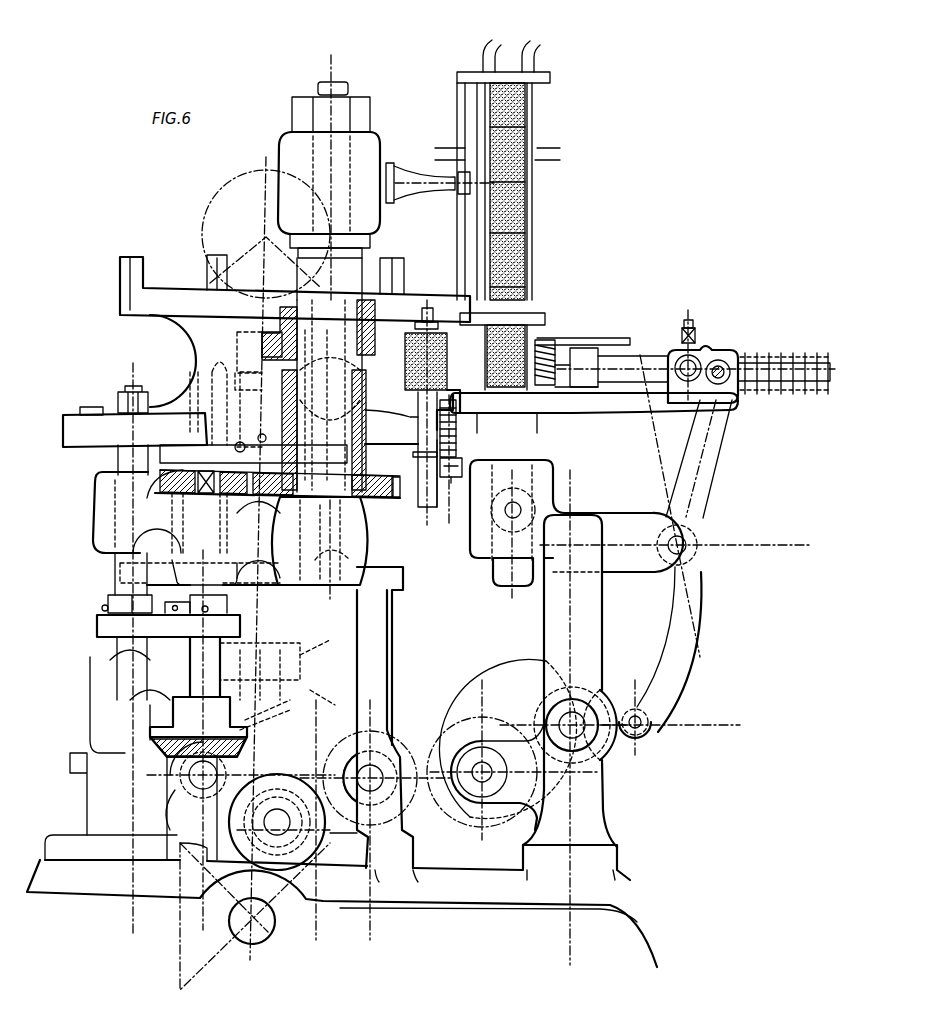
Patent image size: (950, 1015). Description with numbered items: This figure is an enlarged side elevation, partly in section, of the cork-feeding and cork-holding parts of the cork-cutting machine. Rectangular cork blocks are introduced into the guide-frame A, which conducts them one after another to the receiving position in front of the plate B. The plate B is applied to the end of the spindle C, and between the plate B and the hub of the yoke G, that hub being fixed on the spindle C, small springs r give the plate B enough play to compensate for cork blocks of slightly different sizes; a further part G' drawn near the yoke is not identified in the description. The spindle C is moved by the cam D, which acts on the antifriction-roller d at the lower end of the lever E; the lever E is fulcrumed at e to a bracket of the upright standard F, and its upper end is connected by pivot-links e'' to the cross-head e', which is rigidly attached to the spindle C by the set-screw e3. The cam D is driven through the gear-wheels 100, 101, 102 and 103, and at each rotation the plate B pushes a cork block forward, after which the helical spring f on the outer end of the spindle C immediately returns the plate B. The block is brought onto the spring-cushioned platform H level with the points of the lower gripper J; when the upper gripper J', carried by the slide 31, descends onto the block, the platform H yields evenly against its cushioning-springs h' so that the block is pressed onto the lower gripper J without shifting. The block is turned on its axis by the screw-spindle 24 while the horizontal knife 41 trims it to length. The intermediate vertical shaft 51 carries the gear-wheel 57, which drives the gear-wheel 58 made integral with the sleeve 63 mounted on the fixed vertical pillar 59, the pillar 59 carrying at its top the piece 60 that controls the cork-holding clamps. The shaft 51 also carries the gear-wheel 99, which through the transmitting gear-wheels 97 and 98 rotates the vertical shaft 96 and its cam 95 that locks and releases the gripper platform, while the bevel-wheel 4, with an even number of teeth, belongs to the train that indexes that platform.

The bevel-wheel 4 is at (255, 565).
The slide 31 is at (405, 282).
The horizontal knife 41 is at (208, 383).
The fixed vertical pillar 59 is at (321, 273).
The piece 60 is at (258, 360).
The sleeve 63 is at (391, 453).
The cam 95 is at (80, 445).
The vertical shaft 96 is at (125, 452).
The gear-wheel 57 is at (170, 498).
The gear-wheel 58 is at (372, 498).
The transmitting gear-wheel 97 is at (105, 625).
The transmitting gear-wheel 98 is at (176, 637).
The gear-wheel 99 is at (235, 630).
The intermediate vertical shaft 51 is at (188, 662).
The screw-spindle 24 is at (428, 498).
The gear-wheel 100 is at (565, 717).
The gear-wheel 101 is at (490, 728).
The gear-wheel 102 is at (395, 738).
The gear-wheel 103 is at (300, 800).
The guide-frame A is at (527, 213).
The plate B is at (536, 350).
The yoke G is at (583, 337).
The block G' is at (426, 361).
The spindle C is at (611, 366).
The fulcrum e is at (678, 506).
The cross-head e' is at (703, 368).
The pivot-link e'' is at (729, 358).
The set-screw e3 is at (689, 352).
The antifriction-roller d is at (648, 730).
The lever E is at (706, 490).
The upright standard F is at (640, 653).
The cam D is at (492, 672).
The spring-cushioned platform H is at (452, 401).
The cushioning-springs h' is at (462, 460).
The lower gripper J is at (414, 449).
The upper gripper J' is at (431, 410).
The helical spring f is at (696, 365).
The small springs r is at (594, 413).